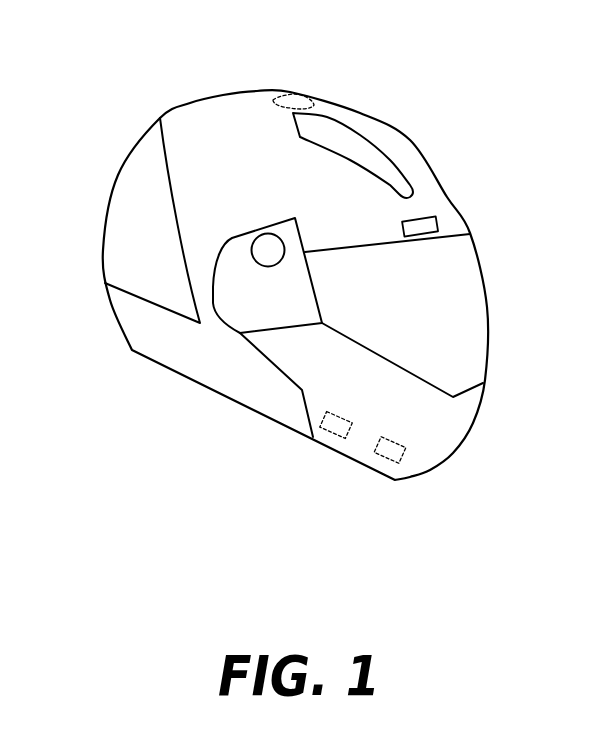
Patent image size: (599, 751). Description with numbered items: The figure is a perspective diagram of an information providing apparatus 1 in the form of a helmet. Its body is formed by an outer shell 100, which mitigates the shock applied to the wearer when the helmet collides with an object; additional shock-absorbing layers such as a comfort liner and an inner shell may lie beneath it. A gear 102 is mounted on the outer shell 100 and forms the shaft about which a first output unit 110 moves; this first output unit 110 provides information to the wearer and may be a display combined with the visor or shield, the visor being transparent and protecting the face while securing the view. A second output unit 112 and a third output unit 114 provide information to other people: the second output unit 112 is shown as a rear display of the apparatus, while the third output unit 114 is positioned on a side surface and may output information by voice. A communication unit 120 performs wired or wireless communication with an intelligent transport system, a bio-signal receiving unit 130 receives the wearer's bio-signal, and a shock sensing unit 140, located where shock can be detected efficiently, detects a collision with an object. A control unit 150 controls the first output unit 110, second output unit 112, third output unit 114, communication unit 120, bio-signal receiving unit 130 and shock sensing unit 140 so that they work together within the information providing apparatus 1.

The information providing apparatus 1 is at (295, 266).
The outer shell 100 is at (237, 98).
The gear 102 is at (252, 248).
The first output unit 110 is at (488, 308).
The second output unit 112 is at (103, 237).
The third output unit 114 is at (232, 317).
The communication unit 120 is at (386, 461).
The bio-signal receiving unit 130 is at (437, 224).
The shock sensing unit 140 is at (292, 95).
The control unit 150 is at (332, 433).